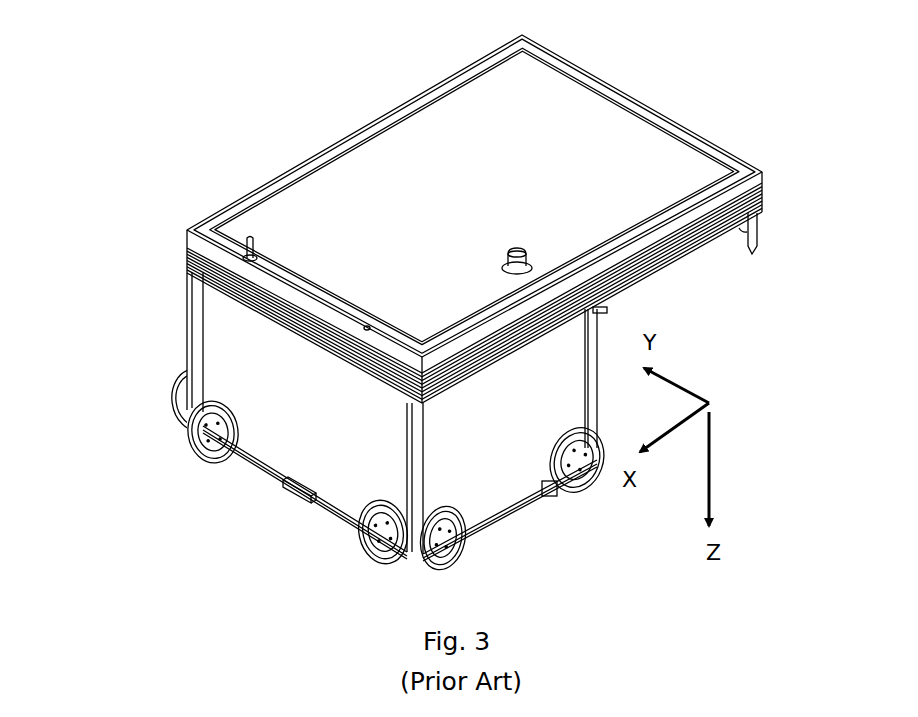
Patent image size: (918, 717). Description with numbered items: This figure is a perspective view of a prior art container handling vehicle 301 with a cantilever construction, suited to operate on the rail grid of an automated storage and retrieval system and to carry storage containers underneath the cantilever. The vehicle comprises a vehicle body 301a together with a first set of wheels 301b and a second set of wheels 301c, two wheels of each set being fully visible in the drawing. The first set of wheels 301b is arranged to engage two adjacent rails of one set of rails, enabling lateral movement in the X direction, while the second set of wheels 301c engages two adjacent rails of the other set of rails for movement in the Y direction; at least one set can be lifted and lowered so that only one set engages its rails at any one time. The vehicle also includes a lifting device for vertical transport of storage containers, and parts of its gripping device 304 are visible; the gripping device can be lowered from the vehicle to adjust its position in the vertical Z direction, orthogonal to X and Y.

The container handling vehicle 301 is at (208, 126).
The vehicle body 301a is at (195, 250).
The first set of wheels 301b is at (547, 521).
The second set of wheels 301c is at (238, 501).
The gripping device 304 is at (772, 252).